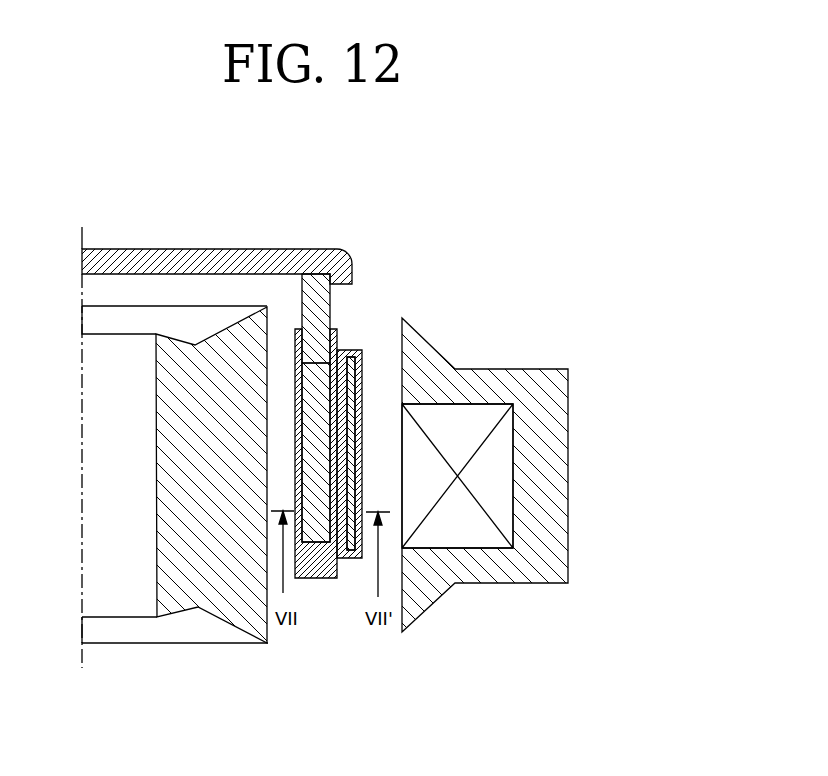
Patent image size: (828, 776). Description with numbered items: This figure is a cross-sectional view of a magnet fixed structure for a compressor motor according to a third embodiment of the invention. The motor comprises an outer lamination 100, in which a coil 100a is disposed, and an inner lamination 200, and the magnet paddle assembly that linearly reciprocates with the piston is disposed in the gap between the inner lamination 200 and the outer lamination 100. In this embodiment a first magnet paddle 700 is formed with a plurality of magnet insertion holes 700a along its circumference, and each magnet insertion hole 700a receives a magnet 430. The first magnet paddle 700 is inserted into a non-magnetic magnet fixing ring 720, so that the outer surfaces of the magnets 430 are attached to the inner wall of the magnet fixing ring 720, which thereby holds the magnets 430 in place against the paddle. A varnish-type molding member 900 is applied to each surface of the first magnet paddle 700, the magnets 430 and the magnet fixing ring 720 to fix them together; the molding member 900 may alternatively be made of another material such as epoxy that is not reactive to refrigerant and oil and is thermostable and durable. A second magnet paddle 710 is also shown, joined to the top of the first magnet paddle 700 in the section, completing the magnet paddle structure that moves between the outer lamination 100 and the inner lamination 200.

The outer lamination 100 is at (568, 507).
The coil 100a is at (510, 445).
The inner lamination 200 is at (182, 610).
The magnet 430 is at (315, 542).
The first magnet paddle 700 is at (330, 298).
The magnet insertion hole 700a is at (338, 377).
The second magnet paddle 710 is at (203, 252).
The magnet fixing ring 720 is at (348, 550).
The molding member 900 is at (362, 392).